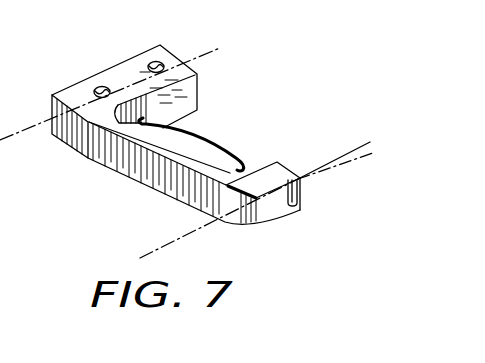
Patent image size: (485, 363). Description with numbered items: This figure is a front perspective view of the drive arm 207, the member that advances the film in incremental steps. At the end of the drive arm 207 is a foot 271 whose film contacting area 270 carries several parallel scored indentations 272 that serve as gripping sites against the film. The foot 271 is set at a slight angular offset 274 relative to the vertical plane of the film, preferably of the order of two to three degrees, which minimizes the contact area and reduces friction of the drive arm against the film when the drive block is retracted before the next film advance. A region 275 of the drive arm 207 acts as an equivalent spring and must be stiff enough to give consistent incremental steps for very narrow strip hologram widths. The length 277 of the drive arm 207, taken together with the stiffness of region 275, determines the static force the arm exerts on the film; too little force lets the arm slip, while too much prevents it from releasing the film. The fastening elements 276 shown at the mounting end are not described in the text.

The drive arm 207 is at (111, 77).
The film contacting area 270 is at (289, 212).
The foot 271 is at (275, 206).
The scored indentations 272 is at (289, 208).
The angular offset 274 is at (337, 203).
The region 275 is at (213, 145).
The screws 276 is at (94, 89).
The length 277 is at (10, 138).